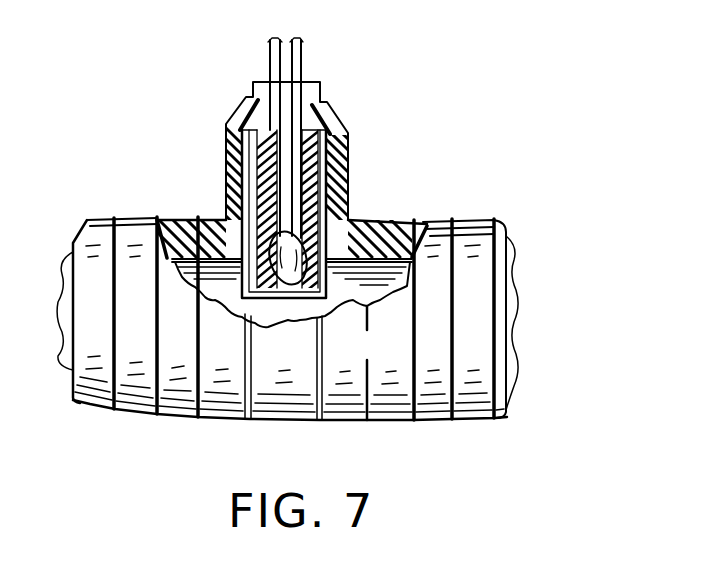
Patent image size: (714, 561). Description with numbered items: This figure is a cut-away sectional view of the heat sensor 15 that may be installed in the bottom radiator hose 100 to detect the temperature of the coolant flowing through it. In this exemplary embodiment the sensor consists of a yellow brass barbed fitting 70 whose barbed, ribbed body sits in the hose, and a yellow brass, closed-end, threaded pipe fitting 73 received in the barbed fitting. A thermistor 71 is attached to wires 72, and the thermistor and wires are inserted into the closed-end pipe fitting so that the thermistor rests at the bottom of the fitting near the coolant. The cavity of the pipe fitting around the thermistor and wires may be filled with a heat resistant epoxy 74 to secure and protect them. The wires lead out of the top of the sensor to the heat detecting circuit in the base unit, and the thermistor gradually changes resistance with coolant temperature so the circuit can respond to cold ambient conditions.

The thermistor and resistor heat sensor 15 is at (410, 87).
The barbed fitting 70 is at (180, 218).
The thermistor 71 is at (289, 302).
The wires 72 is at (313, 67).
The closed-end threaded pipe fitting 73 is at (345, 310).
The heat resistant epoxy 74 is at (253, 150).
The hose 100 is at (453, 221).